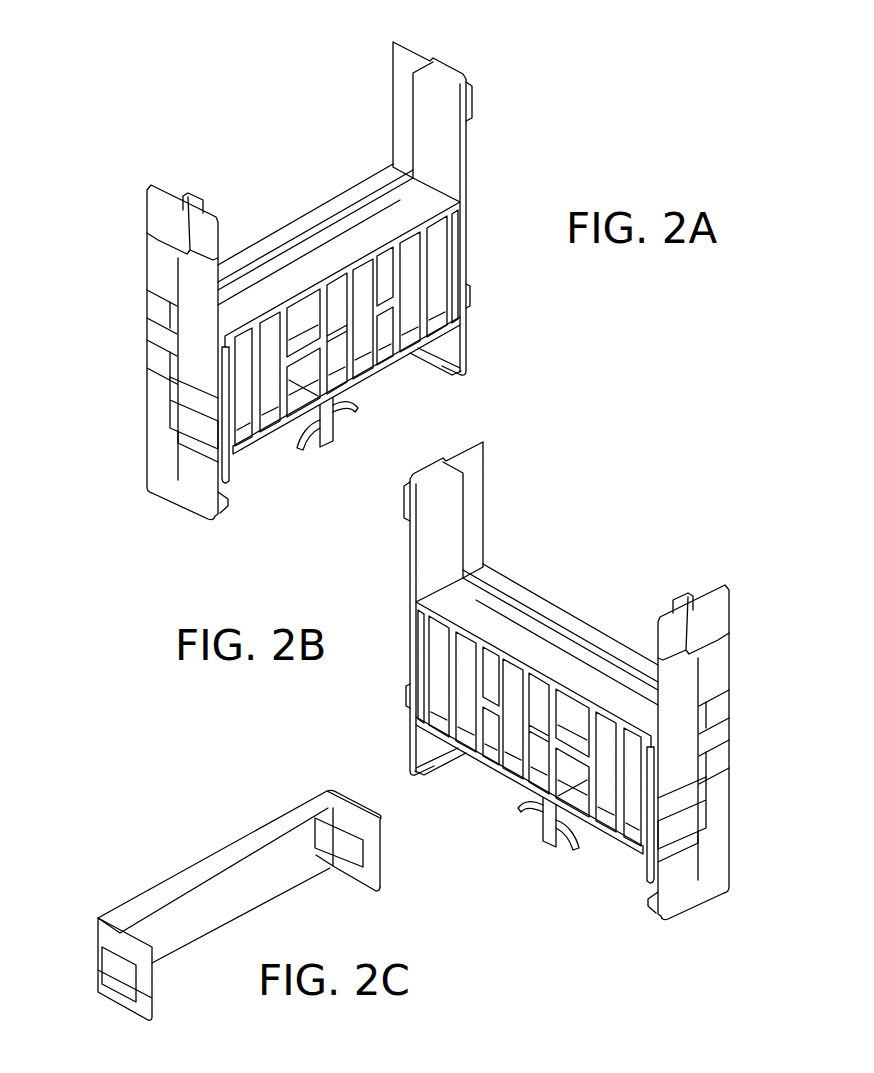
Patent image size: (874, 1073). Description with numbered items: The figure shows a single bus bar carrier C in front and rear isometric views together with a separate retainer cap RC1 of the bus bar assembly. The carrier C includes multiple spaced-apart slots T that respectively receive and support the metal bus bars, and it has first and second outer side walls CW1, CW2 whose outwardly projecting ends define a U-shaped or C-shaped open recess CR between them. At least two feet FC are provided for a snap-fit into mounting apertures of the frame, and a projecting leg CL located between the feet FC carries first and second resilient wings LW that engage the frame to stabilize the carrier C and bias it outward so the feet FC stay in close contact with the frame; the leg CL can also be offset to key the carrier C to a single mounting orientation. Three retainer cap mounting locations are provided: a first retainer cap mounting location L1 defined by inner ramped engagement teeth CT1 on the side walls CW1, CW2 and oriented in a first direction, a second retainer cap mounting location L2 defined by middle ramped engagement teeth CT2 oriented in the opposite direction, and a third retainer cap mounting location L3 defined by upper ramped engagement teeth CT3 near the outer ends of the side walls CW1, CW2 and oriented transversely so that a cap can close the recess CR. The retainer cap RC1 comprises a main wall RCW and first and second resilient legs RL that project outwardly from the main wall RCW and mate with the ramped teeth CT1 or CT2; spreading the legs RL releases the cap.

In FIG. 2A, the bus bar carrier C is at (322, 182).
In FIG. 2B, the bus bar carrier C is at (557, 518).
In FIG. 2A, the open recess CR is at (268, 180).
In FIG. 2B, the open recess CR is at (571, 575).
In FIG. 2A, the first outer side wall CW1 is at (455, 146).
In FIG. 2B, the first outer side wall CW1 is at (680, 897).
In FIG. 2A, the second outer side wall CW2 is at (162, 270).
In FIG. 2B, the second outer side wall CW2 is at (422, 558).
In FIG. 2A, the inner ramped engagement teeth CT1 is at (469, 297).
In FIG. 2B, the inner ramped engagement teeth CT1 is at (665, 830).
In FIG. 2A, the middle ramped engagement teeth CT2 is at (155, 340).
In FIG. 2B, the middle ramped engagement teeth CT2 is at (712, 732).
In FIG. 2A, the upper ramped engagement teeth CT3 is at (472, 106).
In FIG. 2B, the upper ramped engagement teeth CT3 is at (407, 508).
In FIG. 2A, the slots T is at (265, 340).
In FIG. 2B, the slots T is at (467, 655).
In FIG. 2A, the feet FC is at (441, 372).
In FIG. 2B, the feet FC is at (433, 772).
In FIG. 2A, the resilient wings LW is at (358, 408).
In FIG. 2B, the resilient wings LW is at (498, 797).
In FIG. 2A, the projecting leg CL is at (320, 448).
In FIG. 2B, the projecting leg CL is at (518, 828).
In FIG. 2A, the first retainer cap mounting location L1 is at (157, 415).
In FIG. 2B, the first retainer cap mounting location L1 is at (715, 843).
In FIG. 2A, the second retainer cap mounting location L2 is at (129, 295).
In FIG. 2B, the second retainer cap mounting location L2 is at (738, 760).
In FIG. 2A, the third retainer cap mounting location L3 is at (462, 44).
In FIG. 2C, the retainer cap RC1 is at (346, 780).
In FIG. 2C, the main wall RCW is at (253, 835).
In FIG. 2C, the resilient legs RL is at (362, 873).